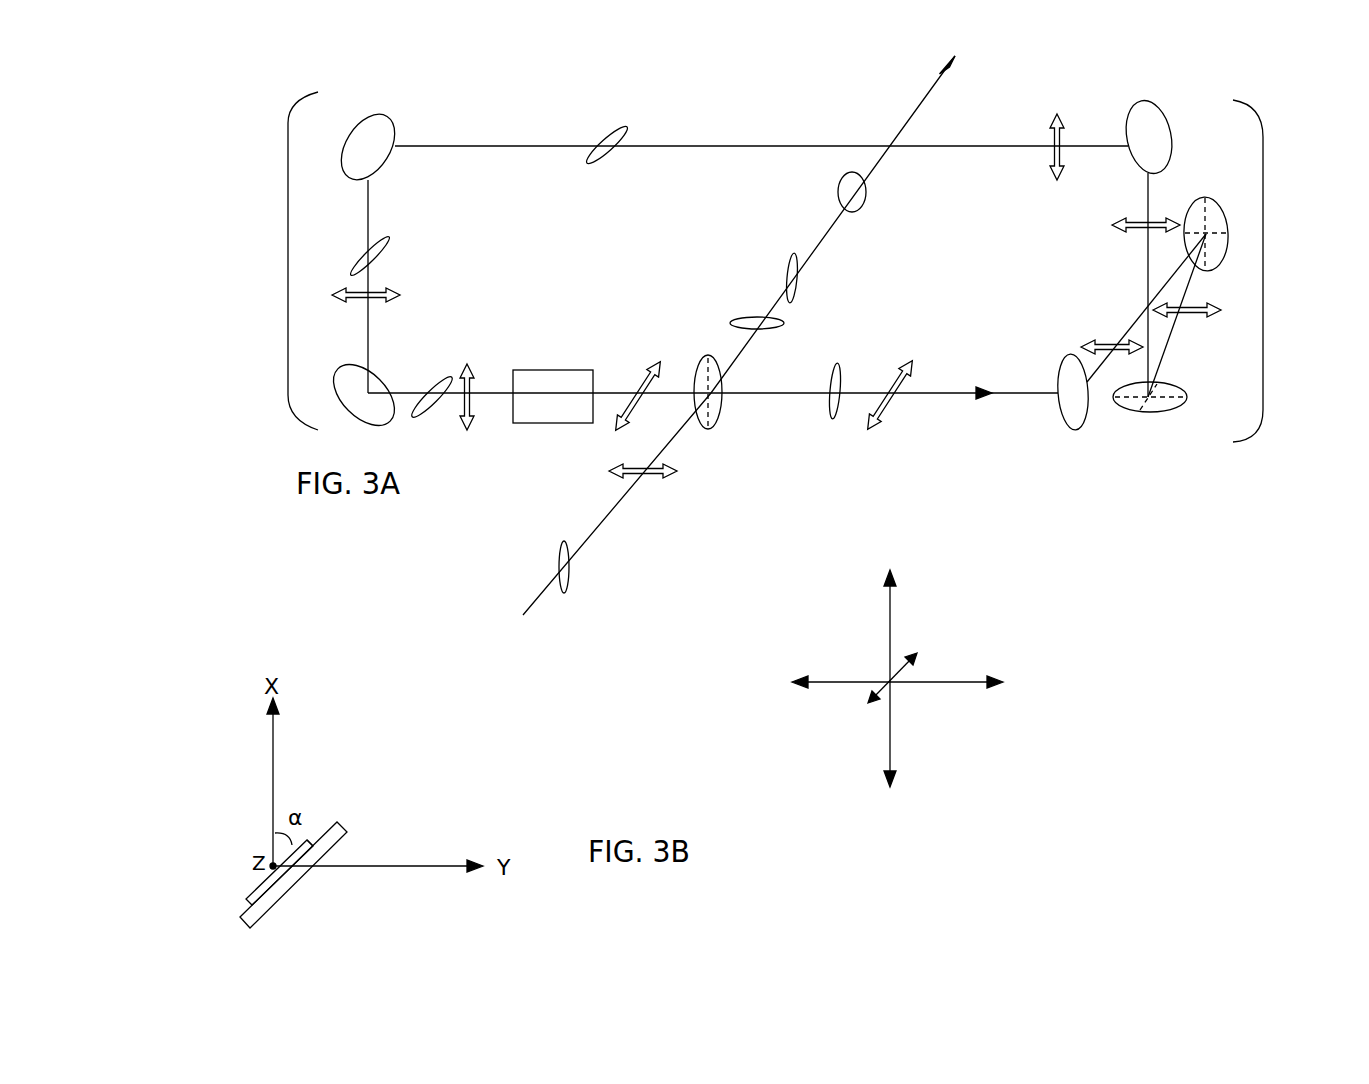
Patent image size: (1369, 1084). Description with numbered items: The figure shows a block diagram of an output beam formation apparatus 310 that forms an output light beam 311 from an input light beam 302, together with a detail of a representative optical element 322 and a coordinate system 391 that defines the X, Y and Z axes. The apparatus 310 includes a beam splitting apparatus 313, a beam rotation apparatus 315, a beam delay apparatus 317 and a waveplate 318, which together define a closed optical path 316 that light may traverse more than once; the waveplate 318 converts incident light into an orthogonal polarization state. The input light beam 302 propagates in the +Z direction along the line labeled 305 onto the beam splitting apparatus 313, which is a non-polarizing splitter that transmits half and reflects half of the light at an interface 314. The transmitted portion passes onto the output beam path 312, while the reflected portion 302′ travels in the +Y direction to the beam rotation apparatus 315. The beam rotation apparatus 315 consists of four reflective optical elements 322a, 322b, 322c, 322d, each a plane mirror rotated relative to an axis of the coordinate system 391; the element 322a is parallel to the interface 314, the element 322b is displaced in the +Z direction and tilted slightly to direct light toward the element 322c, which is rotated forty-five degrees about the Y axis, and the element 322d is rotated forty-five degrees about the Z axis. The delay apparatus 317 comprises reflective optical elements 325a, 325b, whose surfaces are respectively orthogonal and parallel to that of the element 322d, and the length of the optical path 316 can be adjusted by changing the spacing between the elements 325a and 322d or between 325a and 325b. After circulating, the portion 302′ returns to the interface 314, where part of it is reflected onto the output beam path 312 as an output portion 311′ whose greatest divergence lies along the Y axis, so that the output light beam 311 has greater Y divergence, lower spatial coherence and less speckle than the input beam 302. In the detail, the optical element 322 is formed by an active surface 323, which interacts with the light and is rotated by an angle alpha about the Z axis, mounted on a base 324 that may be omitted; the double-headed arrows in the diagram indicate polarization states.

In FIG. 3A, the output beam formation apparatus 310 is at (510, 90).
In FIG. 3A, the input light beam 302 is at (565, 583).
In FIG. 3A, the reflected portion of the input beam 302′ is at (612, 150).
In FIG. 3A, the input beam path 305 is at (608, 513).
In FIG. 3A, the output light beam 311 is at (866, 186).
In FIG. 3A, the output portion 311′ is at (742, 320).
In FIG. 3A, the output beam path 312 is at (928, 95).
In FIG. 3A, the beam splitting apparatus 313 is at (705, 357).
In FIG. 3A, the interface 314 is at (713, 417).
In FIG. 3A, the beam rotation apparatus 315 is at (1263, 272).
In FIG. 3A, the optical path 316 is at (770, 146).
In FIG. 3A, the beam delay apparatus 317 is at (288, 260).
In FIG. 3A, the waveplate 318 is at (553, 396).
In FIG. 3B, the optical element 322 is at (312, 884).
In FIG. 3A, the reflective optical element 322a is at (1070, 420).
In FIG. 3A, the reflective optical element 322b is at (1218, 210).
In FIG. 3A, the reflective optical element 322c is at (1150, 405).
In FIG. 3A, the reflective optical element 322d is at (1148, 117).
In FIG. 3B, the active surface 323 is at (250, 892).
In FIG. 3B, the base 324 is at (342, 823).
In FIG. 3A, the reflective optical element 325a is at (358, 146).
In FIG. 3A, the reflective optical element 325b is at (347, 393).
In FIG. 3B, the coordinate system 391 is at (1001, 568).